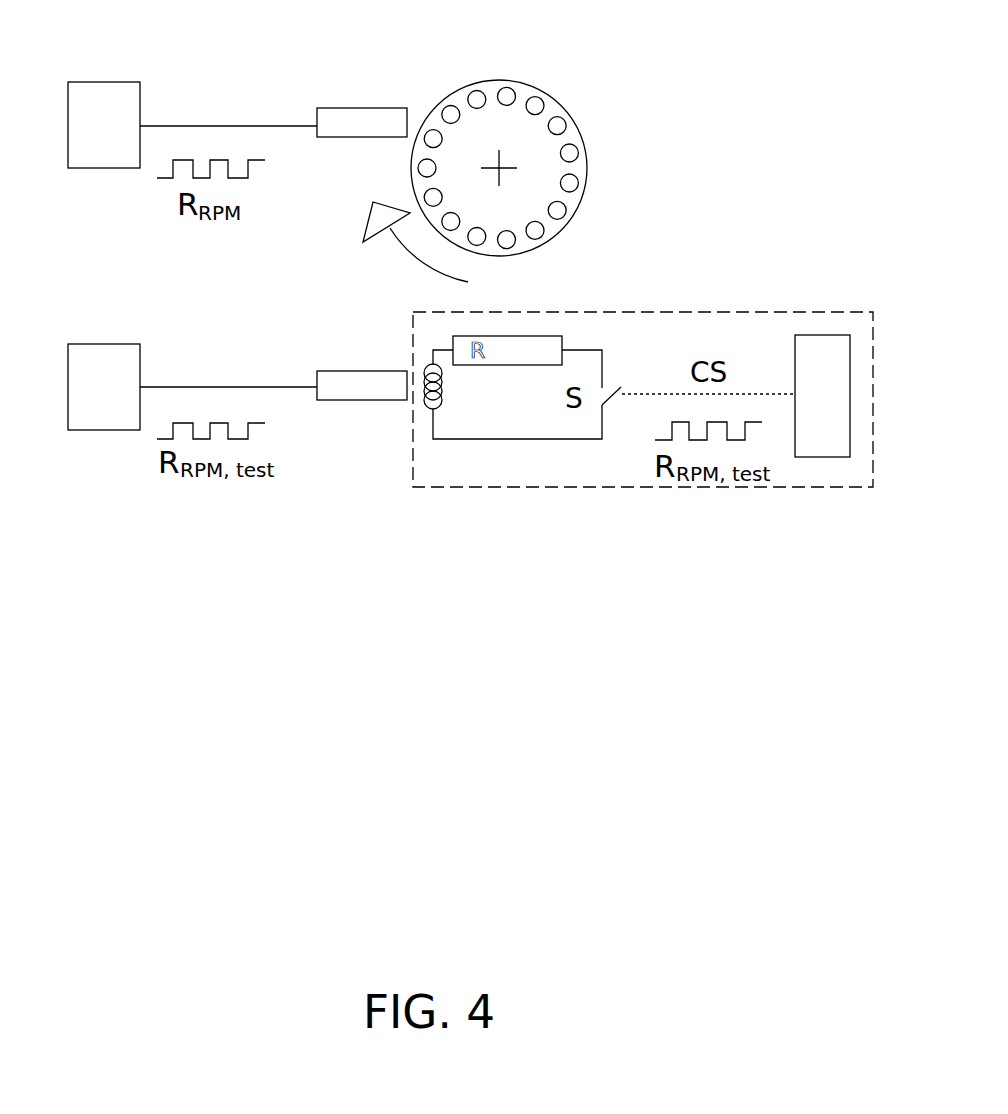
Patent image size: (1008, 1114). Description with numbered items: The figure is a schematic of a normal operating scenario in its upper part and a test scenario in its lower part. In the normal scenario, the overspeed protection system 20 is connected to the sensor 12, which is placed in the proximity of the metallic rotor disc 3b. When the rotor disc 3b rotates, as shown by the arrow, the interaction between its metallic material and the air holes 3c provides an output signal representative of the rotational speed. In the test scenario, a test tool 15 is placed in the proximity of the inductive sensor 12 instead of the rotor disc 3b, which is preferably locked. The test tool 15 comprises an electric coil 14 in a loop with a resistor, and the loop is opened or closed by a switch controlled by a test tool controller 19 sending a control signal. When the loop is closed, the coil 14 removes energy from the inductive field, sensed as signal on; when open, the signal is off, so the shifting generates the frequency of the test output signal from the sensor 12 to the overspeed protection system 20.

The overspeed protection system 20 is at (104, 256).
The inductive sensor 12 is at (362, 255).
The rotor disc 3b is at (535, 178).
The air holes 3c is at (518, 87).
The test tool 15 is at (633, 312).
The electric coil 14 is at (430, 404).
The test tool controller 19 is at (822, 396).